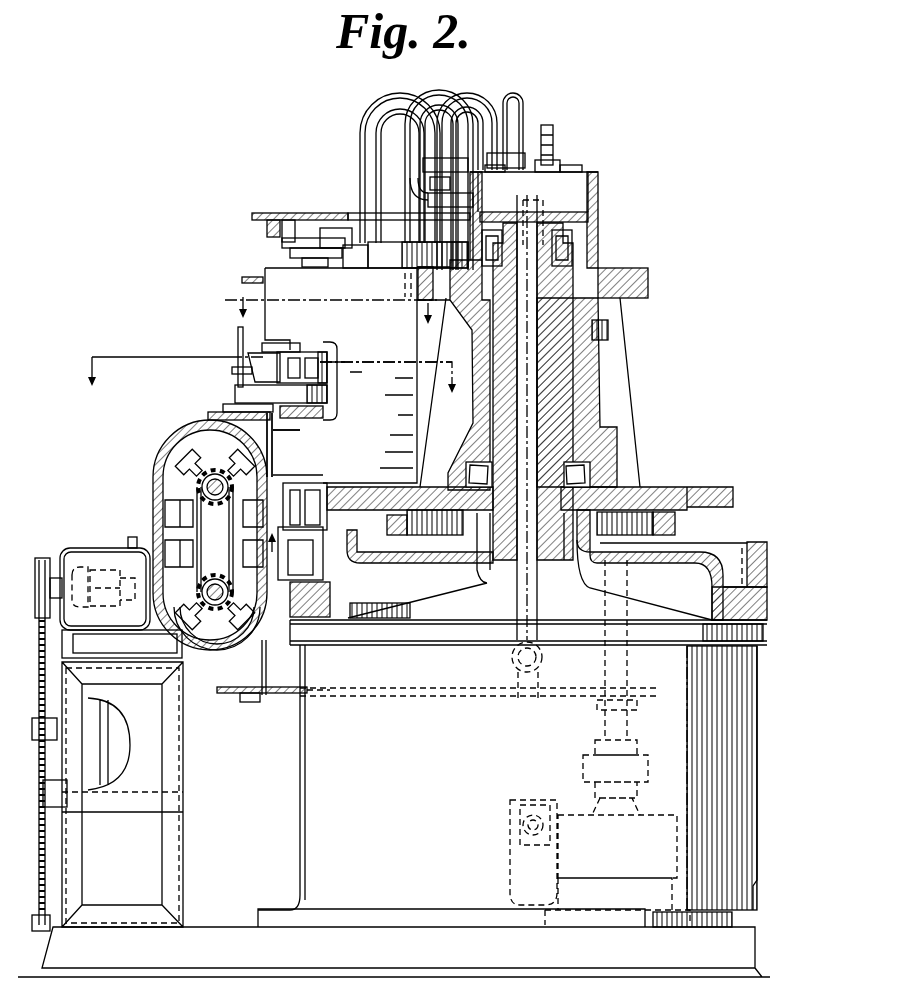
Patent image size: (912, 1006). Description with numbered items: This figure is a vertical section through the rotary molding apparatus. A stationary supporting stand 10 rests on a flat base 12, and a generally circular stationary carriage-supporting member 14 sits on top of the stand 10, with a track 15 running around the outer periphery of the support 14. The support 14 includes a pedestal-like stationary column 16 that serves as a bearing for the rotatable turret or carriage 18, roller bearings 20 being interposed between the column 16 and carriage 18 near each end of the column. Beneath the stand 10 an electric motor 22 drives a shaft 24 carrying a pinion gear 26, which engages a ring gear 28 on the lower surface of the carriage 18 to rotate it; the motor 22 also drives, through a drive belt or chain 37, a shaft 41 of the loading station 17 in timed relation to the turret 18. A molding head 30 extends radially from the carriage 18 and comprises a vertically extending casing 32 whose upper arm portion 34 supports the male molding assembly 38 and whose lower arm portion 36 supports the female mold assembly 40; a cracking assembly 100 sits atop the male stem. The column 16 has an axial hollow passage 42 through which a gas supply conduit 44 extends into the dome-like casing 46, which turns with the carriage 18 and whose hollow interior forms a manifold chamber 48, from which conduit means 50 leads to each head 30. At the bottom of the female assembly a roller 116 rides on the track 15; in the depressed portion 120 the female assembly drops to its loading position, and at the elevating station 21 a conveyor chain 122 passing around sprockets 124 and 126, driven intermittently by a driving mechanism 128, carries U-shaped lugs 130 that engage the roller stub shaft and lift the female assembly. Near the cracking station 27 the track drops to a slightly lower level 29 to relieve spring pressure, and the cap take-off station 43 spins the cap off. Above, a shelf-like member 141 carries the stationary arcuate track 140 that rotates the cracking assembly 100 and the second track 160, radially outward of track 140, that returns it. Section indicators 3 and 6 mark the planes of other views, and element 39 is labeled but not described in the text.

The stationary supporting stand 10 is at (746, 680).
The flat base 12 is at (230, 926).
The stationary carriage-supporting member 14 is at (770, 613).
The track 15 is at (760, 542).
The stationary column 16 is at (565, 388).
The loading station 17 is at (233, 393).
The rotatable turret or carriage 18 is at (598, 439).
The roller bearings 20 is at (592, 469).
The elevating station 21 is at (156, 490).
The electric motor 22 is at (655, 813).
The shaft 24 is at (630, 735).
The pinion gear 26 is at (625, 512).
The cracking station 27 is at (314, 216).
The ring gear 28 is at (678, 529).
The depressed track level 29 is at (410, 565).
The molding head 30 is at (400, 406).
The casing 32 is at (386, 352).
The upper arm portion 34 is at (287, 335).
The lower arm portion 36 is at (288, 445).
The drive belt or chain 37 is at (288, 694).
The male molding assembly 38 is at (300, 351).
The support bar 39 is at (210, 414).
The female mold assembly 40 is at (305, 419).
The shaft 41 is at (267, 668).
The hollow passage 42 is at (548, 414).
The cap take-off station 43 is at (237, 363).
The gas supply conduit 44 is at (540, 601).
The dome-like casing 46 is at (598, 242).
The manifold chamber 48 is at (534, 185).
The conduit means 50 is at (378, 150).
The cracking assembly 100 is at (278, 248).
The roller 116 is at (292, 580).
The depressed portion of track 120 is at (298, 605).
The conveyor chain 122 is at (218, 472).
The sprocket member 124 is at (219, 505).
The sprocket member 126 is at (218, 575).
The driving mechanism 128 is at (107, 549).
The U-shaped lug members 130 is at (238, 648).
The stationary track 140 is at (342, 212).
The shelf-like member 141 is at (252, 216).
The second track 160 is at (273, 212).
The section line 3 is at (269, 375).
The section line 6 is at (329, 315).